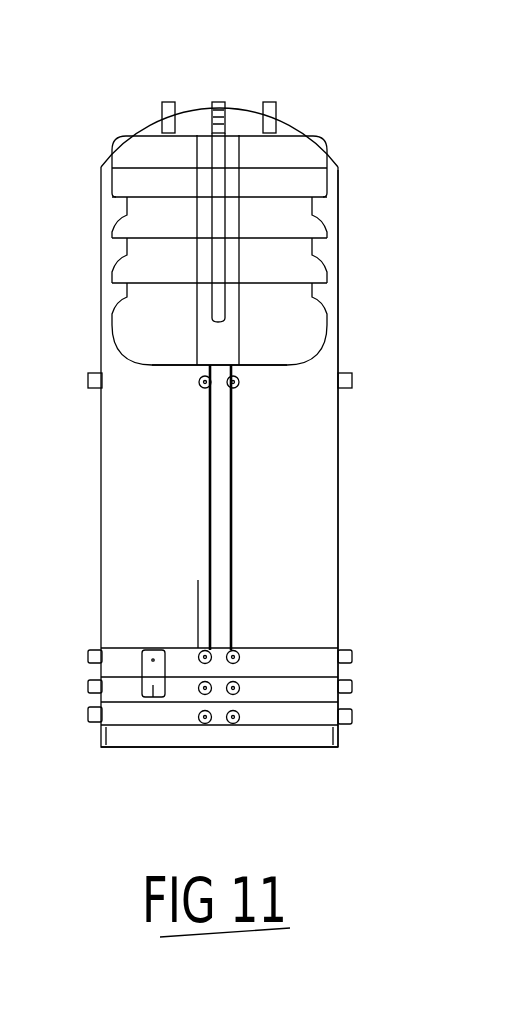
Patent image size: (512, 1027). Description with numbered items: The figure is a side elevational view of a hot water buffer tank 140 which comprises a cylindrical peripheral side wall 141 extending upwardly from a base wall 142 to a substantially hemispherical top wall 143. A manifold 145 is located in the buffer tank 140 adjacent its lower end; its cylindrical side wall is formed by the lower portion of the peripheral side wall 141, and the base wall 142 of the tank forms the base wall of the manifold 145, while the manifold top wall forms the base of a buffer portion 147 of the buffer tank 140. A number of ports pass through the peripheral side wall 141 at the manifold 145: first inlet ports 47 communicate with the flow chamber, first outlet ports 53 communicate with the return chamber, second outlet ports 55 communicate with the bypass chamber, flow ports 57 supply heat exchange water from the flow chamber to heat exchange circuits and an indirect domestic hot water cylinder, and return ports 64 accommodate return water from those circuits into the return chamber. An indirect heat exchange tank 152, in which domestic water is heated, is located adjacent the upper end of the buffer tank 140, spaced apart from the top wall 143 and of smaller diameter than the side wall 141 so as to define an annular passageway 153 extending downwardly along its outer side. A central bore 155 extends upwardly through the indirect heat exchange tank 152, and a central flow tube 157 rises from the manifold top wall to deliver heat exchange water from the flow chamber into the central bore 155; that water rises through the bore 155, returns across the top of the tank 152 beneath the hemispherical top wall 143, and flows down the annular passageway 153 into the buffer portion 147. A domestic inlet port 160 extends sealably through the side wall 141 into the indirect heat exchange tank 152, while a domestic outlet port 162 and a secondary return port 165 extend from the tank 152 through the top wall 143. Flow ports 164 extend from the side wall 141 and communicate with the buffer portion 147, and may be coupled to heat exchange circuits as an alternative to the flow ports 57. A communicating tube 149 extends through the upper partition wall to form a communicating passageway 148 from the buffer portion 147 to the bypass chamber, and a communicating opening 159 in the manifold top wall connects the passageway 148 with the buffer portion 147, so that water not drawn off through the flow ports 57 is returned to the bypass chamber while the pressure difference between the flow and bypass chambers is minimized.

The buffer tank 140 is at (382, 97).
The cylindrical peripheral side wall 141 is at (338, 503).
The base wall 142 is at (140, 727).
The hemispherical top wall 143 is at (285, 120).
The manifold 145 is at (283, 650).
The buffer portion 147 is at (320, 425).
The communicating passageway 148 is at (153, 697).
The communicating tube 149 is at (178, 653).
The indirect heat exchange tank 152 is at (312, 318).
The annular passageway 153 is at (338, 226).
The central bore 155 is at (243, 332).
The central flow tube 157 is at (231, 498).
The communicating opening 159 is at (150, 653).
The domestic inlet port 160 is at (217, 102).
The domestic outlet port 162 is at (267, 102).
The secondary return port 165 is at (165, 102).
The flow ports 164 is at (95, 390).
The first inlet ports 47 is at (198, 580).
The first outlet ports 53 is at (352, 722).
The second outlet ports 55 is at (90, 687).
The flow ports 57 is at (90, 655).
The return ports 64 is at (90, 717).